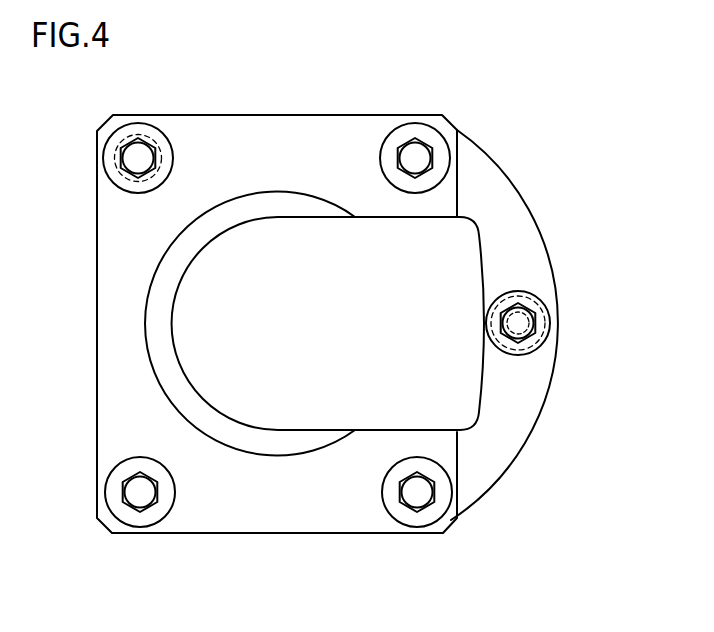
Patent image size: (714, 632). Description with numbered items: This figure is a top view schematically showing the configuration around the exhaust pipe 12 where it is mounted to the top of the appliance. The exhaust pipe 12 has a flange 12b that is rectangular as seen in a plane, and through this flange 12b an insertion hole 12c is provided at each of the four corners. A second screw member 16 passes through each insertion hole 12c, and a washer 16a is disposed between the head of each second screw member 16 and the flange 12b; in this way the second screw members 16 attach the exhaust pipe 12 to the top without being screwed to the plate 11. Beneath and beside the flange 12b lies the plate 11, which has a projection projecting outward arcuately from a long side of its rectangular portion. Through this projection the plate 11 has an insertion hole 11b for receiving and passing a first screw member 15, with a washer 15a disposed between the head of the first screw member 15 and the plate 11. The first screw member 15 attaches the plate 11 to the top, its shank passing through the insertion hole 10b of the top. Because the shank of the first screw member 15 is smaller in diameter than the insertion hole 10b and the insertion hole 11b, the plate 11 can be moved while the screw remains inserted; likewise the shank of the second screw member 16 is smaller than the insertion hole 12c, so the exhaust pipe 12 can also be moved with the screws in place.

The plate 11 is at (503, 227).
The insertion hole 11b is at (522, 350).
The exhaust pipe 12 is at (458, 270).
The flange 12b is at (284, 150).
The insertion hole 12c is at (163, 140).
The insertion hole 10b is at (528, 303).
The first screw member 15 is at (520, 324).
The washer 15a is at (546, 340).
The second screw member 16 is at (138, 152).
The washer 16a is at (113, 133).